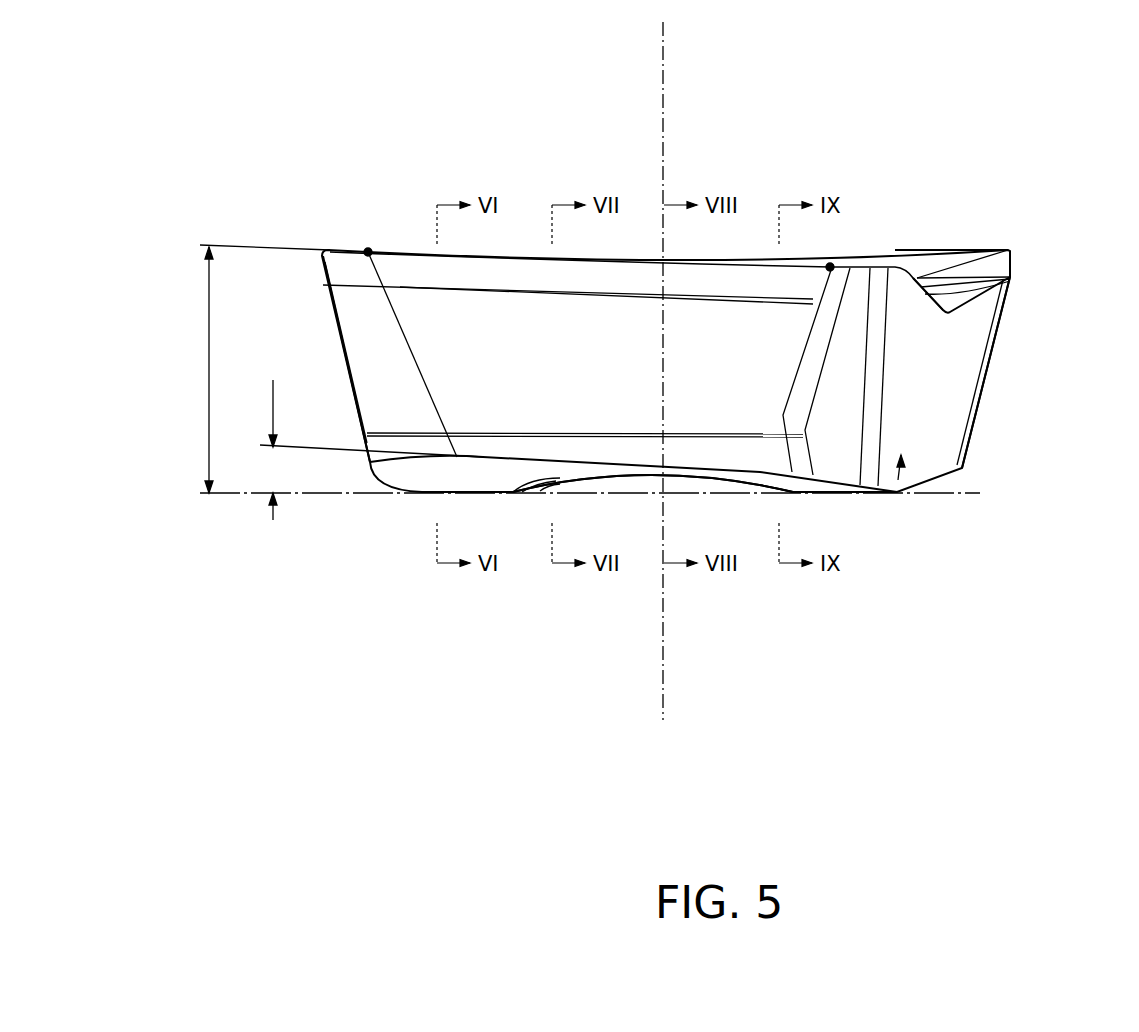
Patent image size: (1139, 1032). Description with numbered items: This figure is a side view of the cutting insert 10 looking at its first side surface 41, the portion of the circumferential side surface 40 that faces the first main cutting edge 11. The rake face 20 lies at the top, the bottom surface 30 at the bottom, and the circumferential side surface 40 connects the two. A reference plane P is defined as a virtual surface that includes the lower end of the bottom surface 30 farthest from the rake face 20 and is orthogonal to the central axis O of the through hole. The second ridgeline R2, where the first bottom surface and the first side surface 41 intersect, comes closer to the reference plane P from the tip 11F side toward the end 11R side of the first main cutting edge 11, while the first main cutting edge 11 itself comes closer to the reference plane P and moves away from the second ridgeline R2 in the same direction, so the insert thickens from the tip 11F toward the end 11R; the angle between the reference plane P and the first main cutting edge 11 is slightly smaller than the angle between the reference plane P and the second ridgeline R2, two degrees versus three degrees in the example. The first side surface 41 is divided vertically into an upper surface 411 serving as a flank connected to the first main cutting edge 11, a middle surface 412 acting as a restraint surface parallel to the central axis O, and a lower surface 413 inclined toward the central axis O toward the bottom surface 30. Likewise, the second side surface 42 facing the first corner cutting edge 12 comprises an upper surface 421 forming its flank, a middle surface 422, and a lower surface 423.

The cutting insert 10 is at (612, 847).
The first main cutting edge 11 is at (639, 257).
The tip of the first main cutting edge 11F is at (368, 252).
The end of the first main cutting edge 11R is at (831, 266).
The first corner cutting edge 12 is at (338, 249).
The rake face 20 is at (967, 253).
The bottom surface 30 is at (837, 494).
The circumferential side surface 40 is at (903, 410).
The first side surface 41 is at (640, 407).
The second side surface 42 is at (360, 327).
The upper surface (flank) 411 is at (568, 280).
The middle surface (restraint surface) 412 is at (620, 365).
The lower surface 413 is at (585, 449).
The upper surface (flank) 421 is at (353, 270).
The middle surface 422 is at (390, 365).
The lower surface 423 is at (412, 448).
The reference plane P is at (323, 494).
The central axis O is at (661, 391).
The second ridgeline R2 is at (483, 458).